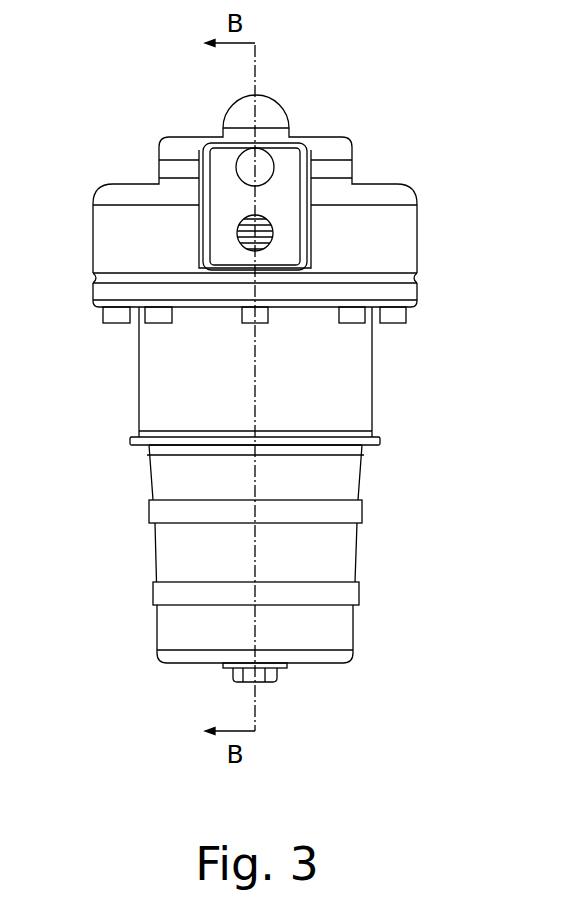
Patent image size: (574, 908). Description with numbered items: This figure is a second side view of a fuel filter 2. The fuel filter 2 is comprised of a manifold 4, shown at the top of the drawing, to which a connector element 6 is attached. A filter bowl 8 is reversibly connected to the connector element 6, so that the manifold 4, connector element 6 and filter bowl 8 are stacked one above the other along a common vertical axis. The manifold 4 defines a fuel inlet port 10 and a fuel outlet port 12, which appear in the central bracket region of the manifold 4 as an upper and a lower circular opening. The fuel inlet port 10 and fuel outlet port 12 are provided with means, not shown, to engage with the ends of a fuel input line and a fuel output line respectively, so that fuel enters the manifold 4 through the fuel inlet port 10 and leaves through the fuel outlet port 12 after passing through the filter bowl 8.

The fuel filter 2 is at (450, 376).
The manifold 4 is at (435, 198).
The connector element 6 is at (435, 293).
The filter bowl 8 is at (375, 547).
The fuel inlet port 10 is at (245, 160).
The fuel outlet port 12 is at (247, 238).